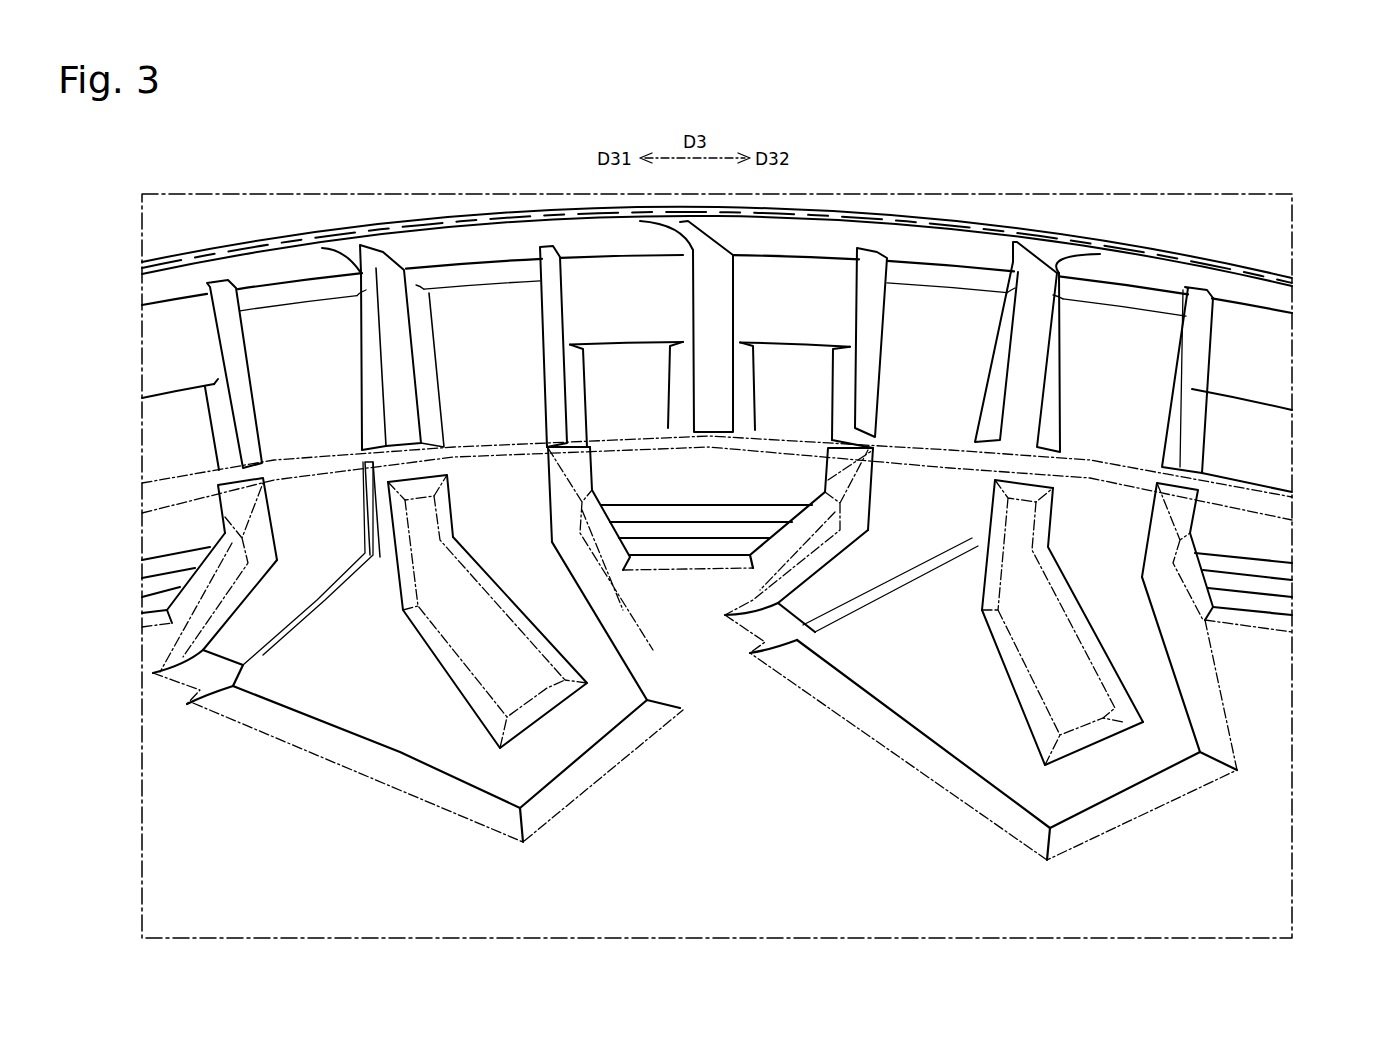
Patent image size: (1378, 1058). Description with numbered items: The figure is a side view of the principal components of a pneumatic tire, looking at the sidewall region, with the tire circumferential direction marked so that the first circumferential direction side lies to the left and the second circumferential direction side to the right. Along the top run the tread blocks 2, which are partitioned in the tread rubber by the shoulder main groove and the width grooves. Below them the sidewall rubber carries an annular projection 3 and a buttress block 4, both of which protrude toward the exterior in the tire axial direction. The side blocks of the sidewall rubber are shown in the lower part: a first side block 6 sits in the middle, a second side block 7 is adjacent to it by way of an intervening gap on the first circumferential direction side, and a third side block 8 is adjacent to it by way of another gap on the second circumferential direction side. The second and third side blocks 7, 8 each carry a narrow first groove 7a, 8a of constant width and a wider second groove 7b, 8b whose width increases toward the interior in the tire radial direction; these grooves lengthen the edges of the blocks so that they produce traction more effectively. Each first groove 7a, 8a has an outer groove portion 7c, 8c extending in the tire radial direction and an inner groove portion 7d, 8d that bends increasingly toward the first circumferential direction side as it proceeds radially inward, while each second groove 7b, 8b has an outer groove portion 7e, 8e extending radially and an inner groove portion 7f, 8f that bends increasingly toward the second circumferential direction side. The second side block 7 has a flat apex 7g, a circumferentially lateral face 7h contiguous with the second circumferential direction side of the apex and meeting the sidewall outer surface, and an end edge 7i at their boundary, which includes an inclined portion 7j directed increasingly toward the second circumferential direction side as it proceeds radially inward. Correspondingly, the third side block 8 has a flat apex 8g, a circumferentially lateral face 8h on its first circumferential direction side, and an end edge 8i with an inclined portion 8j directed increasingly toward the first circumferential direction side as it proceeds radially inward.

The tread block 2 is at (1280, 272).
The annular projection 3 is at (1253, 492).
The buttress block 4 is at (1255, 415).
The first side block 6 is at (715, 470).
The second side block 7 is at (323, 747).
The first groove 7a is at (360, 548).
The second groove 7b is at (400, 618).
The outer groove portion 7c is at (363, 500).
The inner groove portion 7d is at (227, 687).
The outer groove portion 7e is at (467, 482).
The inner groove portion 7f is at (440, 657).
The apex 7g is at (490, 784).
The circumferentially lateral face 7h is at (670, 693).
The end edge 7i is at (572, 518).
The inclined portion 7j is at (618, 643).
The third side block 8 is at (1138, 803).
The first groove 8a is at (950, 533).
The second groove 8b is at (978, 626).
The outer groove portion 8c is at (968, 477).
The inner groove portion 8d is at (797, 652).
The outer groove portion 8e is at (1063, 518).
The inner groove portion 8f is at (1007, 662).
The apex 8g is at (1007, 770).
The circumferentially lateral face 8h is at (758, 597).
The end edge 8i is at (870, 492).
The inclined portion 8j is at (835, 583).